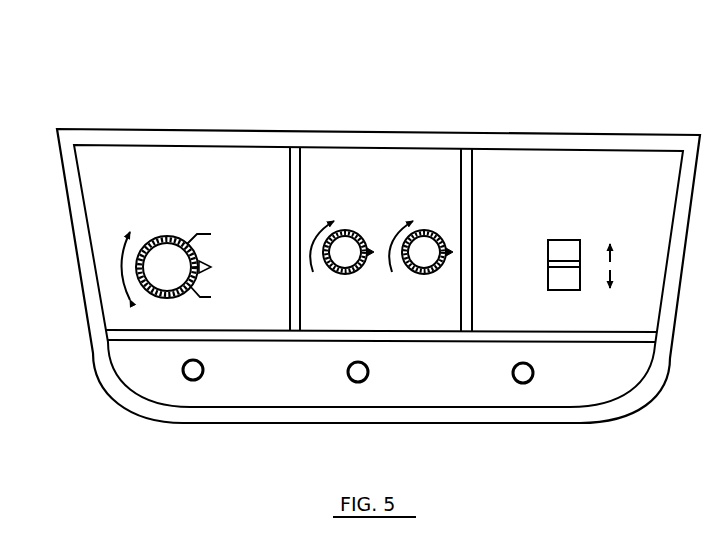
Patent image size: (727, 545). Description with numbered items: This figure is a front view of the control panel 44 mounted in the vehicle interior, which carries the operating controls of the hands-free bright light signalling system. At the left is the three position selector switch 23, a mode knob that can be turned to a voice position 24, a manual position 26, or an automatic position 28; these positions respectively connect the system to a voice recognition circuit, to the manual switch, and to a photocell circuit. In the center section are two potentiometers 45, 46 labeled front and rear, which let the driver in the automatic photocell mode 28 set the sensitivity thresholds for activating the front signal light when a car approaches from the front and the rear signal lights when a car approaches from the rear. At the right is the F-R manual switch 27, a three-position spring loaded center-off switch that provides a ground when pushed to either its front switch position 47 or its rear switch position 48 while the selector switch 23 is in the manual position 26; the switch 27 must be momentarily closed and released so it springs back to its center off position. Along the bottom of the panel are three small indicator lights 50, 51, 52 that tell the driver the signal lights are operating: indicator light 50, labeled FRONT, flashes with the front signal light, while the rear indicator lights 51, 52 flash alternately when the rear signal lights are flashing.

The control panel 44 is at (167, 74).
The three position selector switch 23 is at (162, 237).
The automatic position 28 is at (235, 228).
The manual position 26 is at (247, 263).
The voice position 24 is at (232, 298).
The potentiometer 45 is at (352, 234).
The potentiometer 46 is at (428, 234).
The front switch position 47 is at (547, 224).
The rear switch position 48 is at (549, 305).
The F-R manual switch 27 is at (580, 290).
The indicator light 50 is at (194, 382).
The indicator light 51 is at (358, 384).
The indicator light 52 is at (524, 385).